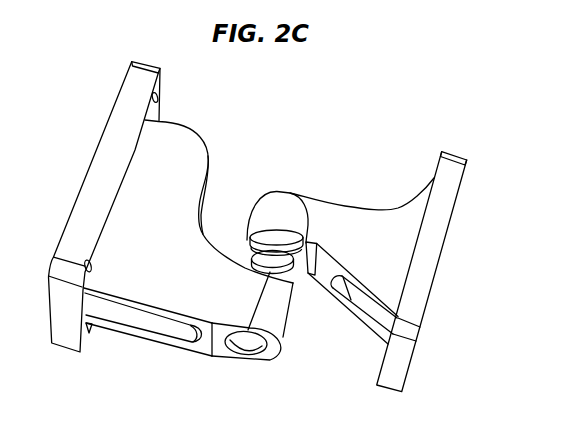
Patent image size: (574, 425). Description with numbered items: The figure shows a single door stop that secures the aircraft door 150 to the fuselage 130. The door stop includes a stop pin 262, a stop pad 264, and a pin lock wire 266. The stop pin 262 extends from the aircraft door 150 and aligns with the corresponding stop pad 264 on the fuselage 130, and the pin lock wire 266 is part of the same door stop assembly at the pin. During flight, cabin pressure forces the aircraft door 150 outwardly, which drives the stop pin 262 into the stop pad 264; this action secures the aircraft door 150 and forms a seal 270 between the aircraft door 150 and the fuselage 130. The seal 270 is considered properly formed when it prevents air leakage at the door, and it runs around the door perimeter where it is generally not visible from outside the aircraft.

The fuselage 130 is at (417, 198).
The aircraft door 150 is at (155, 342).
The stop pin 262 is at (292, 275).
The stop pad 264 is at (283, 230).
The pin lock wire 266 is at (255, 343).
The seal 270 is at (235, 247).